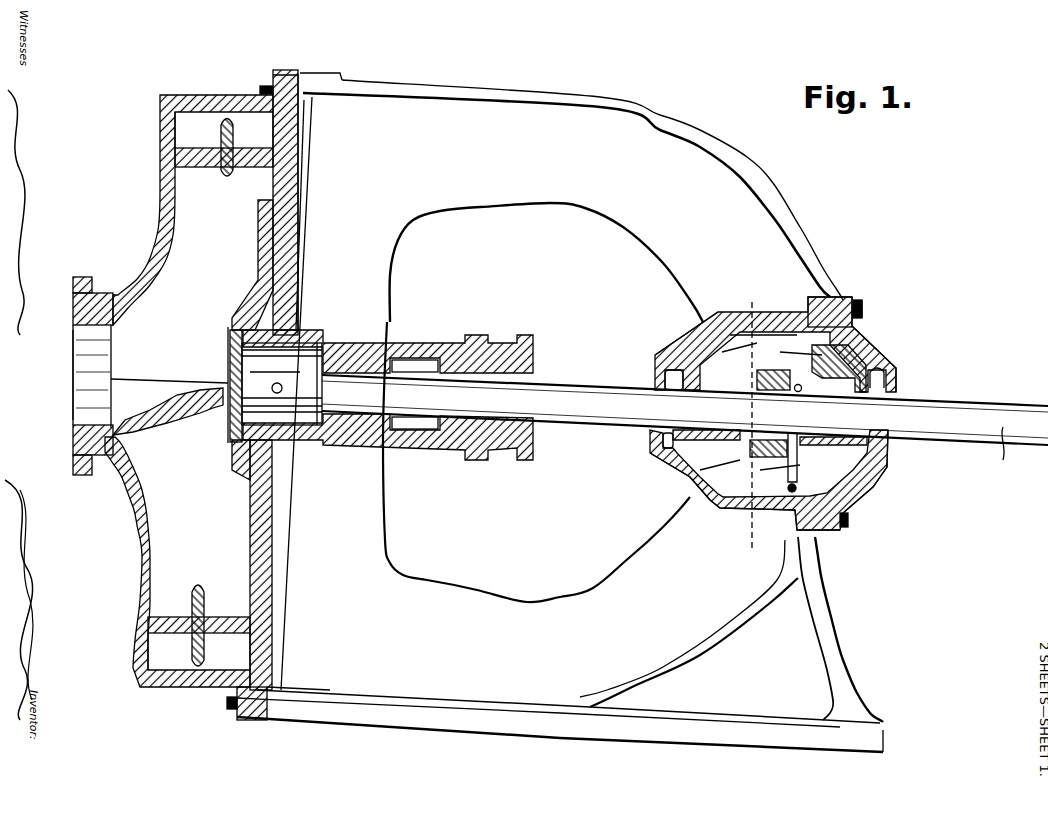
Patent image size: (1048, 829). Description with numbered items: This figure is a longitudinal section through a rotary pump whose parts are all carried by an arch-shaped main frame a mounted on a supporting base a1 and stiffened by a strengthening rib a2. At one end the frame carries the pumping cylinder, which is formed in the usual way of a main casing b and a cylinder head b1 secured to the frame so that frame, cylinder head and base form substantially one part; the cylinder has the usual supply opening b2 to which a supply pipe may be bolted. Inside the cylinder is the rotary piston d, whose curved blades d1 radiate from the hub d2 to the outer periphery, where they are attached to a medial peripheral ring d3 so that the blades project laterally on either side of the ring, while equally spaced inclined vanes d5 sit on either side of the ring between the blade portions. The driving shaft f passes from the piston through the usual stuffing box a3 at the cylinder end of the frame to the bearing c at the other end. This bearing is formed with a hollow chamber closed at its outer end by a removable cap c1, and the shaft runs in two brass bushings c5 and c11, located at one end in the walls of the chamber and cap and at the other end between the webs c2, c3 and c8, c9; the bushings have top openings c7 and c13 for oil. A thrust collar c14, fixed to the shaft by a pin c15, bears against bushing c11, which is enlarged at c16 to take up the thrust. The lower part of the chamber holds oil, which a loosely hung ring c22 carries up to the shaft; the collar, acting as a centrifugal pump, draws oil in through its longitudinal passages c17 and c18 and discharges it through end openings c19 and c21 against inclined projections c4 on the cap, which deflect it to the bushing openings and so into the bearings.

The arch-shaped frame a is at (618, 102).
The supporting base a1 is at (457, 717).
The strengthening rib a2 is at (543, 370).
The stuffing box a3 is at (365, 350).
The main casing b is at (166, 122).
The cylinder head b1 is at (298, 157).
The supply opening b2 is at (78, 384).
The bearing c is at (832, 300).
The removable cap c1 is at (818, 375).
The web c2 is at (843, 367).
The web c3 is at (843, 477).
The projections c4 is at (813, 300).
The brass bushing c5 is at (865, 388).
The opening c7 is at (866, 332).
The web c8 is at (682, 334).
The web c9 is at (693, 470).
The brass bushing c11 is at (654, 380).
The opening c13 is at (705, 368).
The thrust collar c14 is at (777, 462).
The pin c15 is at (802, 390).
The enlargement of bushing c16 is at (712, 322).
The longitudinal passage c17 is at (745, 492).
The longitudinal passage c18 is at (744, 312).
The opening c19 is at (875, 318).
The opening c21 is at (845, 507).
The ring or chain c22 is at (853, 514).
The rotary piston d is at (118, 368).
The curved blades d1 is at (169, 434).
The hub d2 is at (250, 368).
The medial peripheral ring d3 is at (222, 138).
The inclined vanes d5 is at (260, 168).
The driving shaft f is at (685, 433).